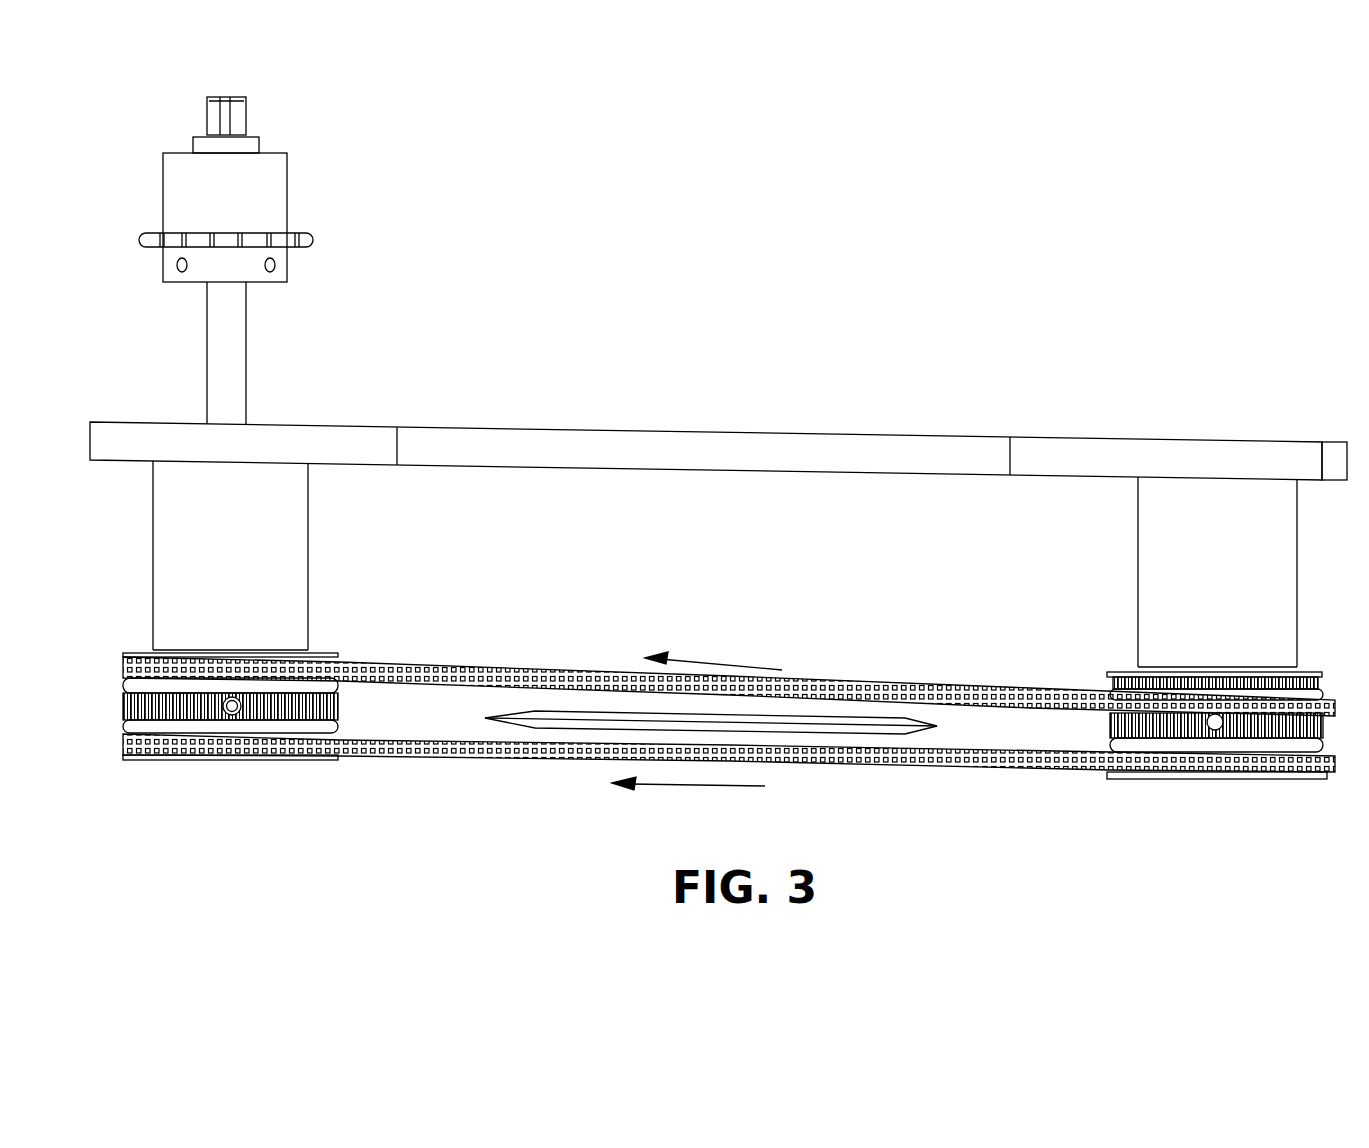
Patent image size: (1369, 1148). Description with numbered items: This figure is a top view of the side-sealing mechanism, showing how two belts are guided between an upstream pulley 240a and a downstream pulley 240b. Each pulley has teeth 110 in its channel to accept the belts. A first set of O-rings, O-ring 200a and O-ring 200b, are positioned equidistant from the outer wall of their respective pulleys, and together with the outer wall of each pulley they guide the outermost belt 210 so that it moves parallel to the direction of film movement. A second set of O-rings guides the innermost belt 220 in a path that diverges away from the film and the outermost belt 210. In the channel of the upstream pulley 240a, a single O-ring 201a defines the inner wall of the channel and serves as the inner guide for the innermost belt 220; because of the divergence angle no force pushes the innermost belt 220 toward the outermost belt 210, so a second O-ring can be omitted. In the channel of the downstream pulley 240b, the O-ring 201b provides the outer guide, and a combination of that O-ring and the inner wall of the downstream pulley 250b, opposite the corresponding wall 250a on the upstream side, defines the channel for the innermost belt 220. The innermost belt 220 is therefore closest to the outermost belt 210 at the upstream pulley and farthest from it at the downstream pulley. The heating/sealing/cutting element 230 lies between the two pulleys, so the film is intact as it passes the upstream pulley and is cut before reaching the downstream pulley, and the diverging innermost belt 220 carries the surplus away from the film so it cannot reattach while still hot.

The teeth 110 is at (338, 708).
The O-ring 200a is at (1325, 746).
The O-ring 200b is at (123, 728).
The O-ring 201a is at (1323, 692).
The O-ring 201b is at (124, 687).
The outermost belt 210 is at (397, 757).
The innermost belt 220 is at (897, 680).
The heating/sealing/cutting element 230 is at (940, 726).
The upstream pulley 240a is at (1262, 780).
The downstream pulley 240b is at (152, 762).
The pulley inner wall 250a is at (1125, 670).
The inner wall of the downstream pulley 250b is at (143, 654).